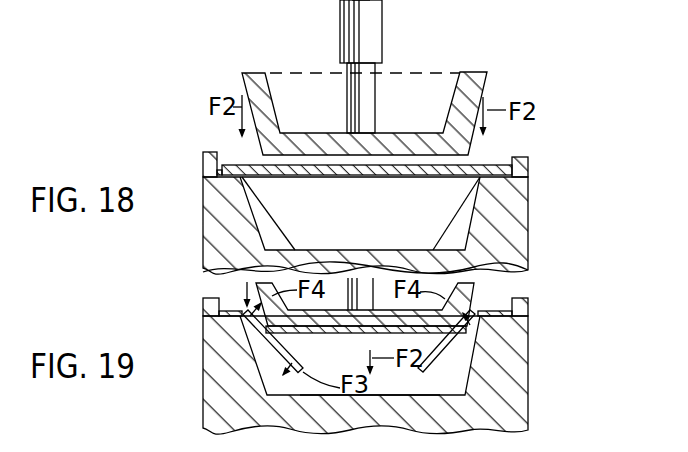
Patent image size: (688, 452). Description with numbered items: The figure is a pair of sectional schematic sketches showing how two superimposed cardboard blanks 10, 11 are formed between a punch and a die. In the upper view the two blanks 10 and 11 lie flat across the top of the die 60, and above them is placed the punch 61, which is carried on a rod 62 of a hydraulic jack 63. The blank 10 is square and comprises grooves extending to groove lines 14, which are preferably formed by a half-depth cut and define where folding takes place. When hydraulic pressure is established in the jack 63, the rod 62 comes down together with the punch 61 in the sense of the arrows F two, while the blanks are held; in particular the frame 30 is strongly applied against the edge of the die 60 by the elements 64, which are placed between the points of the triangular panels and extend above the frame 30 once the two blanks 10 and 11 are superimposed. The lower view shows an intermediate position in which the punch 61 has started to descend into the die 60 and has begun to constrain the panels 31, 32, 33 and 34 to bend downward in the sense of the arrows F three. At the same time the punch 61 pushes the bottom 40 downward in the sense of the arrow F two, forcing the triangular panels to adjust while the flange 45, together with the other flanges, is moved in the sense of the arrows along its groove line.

In FIG. 18, the blank 10 is at (294, 181).
In FIG. 18, the blank 11 is at (226, 160).
In FIG. 19, the groove lines 14 is at (243, 292).
In FIG. 19, the frame 30 is at (230, 306).
In FIG. 19, the panel 31 is at (326, 358).
In FIG. 19, the panel 32 is at (375, 372).
In FIG. 19, the panel 33 is at (462, 350).
In FIG. 18, the panel 34 is at (332, 1).
In FIG. 19, the bottom 40 is at (346, 335).
In FIG. 19, the flange 45 is at (215, 333).
In FIG. 18, the die 60 is at (391, 236).
In FIG. 18, the punch 61 is at (465, 80).
In FIG. 19, the punch 61 is at (478, 300).
In FIG. 18, the rod 62 is at (374, 101).
In FIG. 18, the hydraulic jack 63 is at (373, 38).
In FIG. 18, the elements 64 is at (203, 164).
In FIG. 19, the elements 64 is at (207, 312).